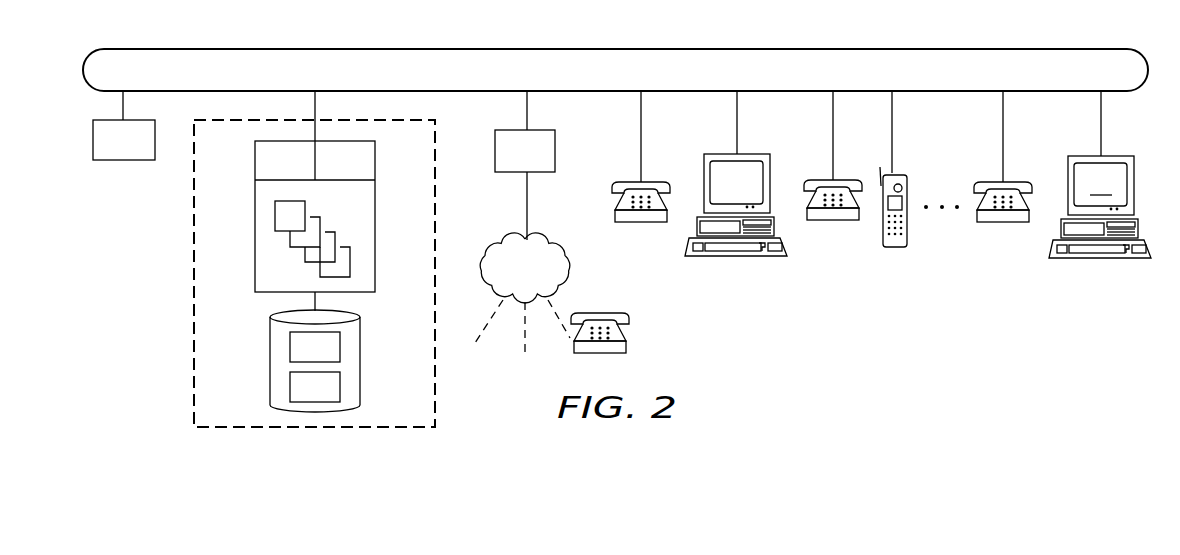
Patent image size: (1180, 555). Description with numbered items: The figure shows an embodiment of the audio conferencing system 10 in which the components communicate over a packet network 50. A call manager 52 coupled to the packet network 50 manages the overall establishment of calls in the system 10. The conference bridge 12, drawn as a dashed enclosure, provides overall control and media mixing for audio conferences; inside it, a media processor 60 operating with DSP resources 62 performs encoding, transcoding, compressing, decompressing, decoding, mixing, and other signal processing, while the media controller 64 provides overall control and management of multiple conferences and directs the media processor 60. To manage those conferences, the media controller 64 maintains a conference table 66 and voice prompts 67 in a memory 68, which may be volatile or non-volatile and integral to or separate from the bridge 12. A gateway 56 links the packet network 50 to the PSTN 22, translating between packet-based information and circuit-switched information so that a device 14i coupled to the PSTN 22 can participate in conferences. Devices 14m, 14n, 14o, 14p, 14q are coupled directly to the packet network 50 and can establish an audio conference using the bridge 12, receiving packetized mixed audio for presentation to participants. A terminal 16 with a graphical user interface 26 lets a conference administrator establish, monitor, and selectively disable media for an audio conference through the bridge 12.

The system 10 is at (860, 326).
The conference bridge 12 is at (193, 276).
The device 14i is at (628, 345).
The device 14m is at (641, 222).
The device 14n is at (737, 256).
The device 14o is at (833, 222).
The device 14p is at (896, 247).
The device 14q is at (1003, 223).
The terminal 16 is at (1100, 200).
The PSTN 22 is at (545, 234).
The graphical user interface 26 is at (1101, 185).
The packet network 50 is at (948, 49).
The call manager 52 is at (122, 161).
The gateway 56 is at (495, 150).
The media processor 60 is at (255, 162).
The digital signal processing resources 62 is at (328, 231).
The media controller 64 is at (375, 162).
The conference table 66 is at (340, 348).
The voice prompts 67 is at (340, 388).
The memory 68 is at (270, 358).